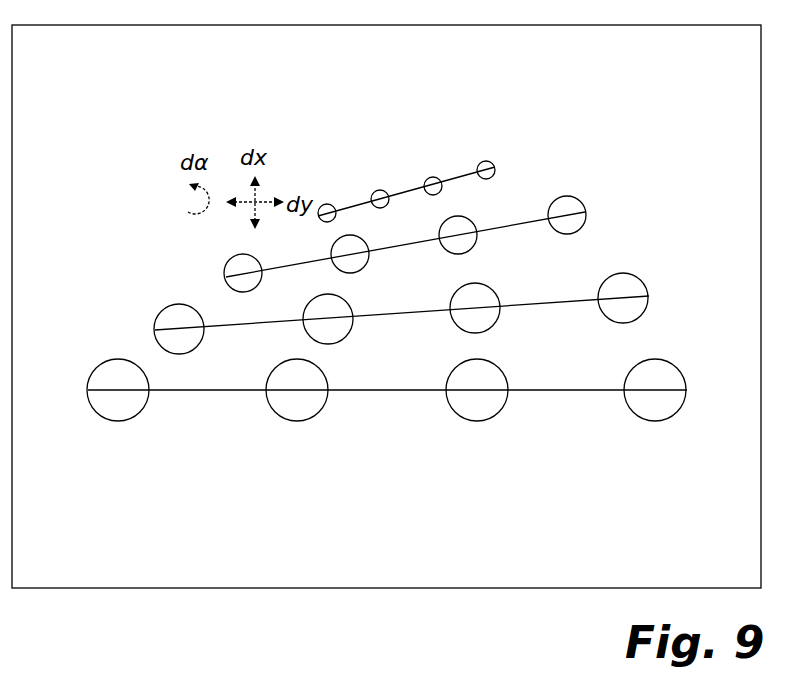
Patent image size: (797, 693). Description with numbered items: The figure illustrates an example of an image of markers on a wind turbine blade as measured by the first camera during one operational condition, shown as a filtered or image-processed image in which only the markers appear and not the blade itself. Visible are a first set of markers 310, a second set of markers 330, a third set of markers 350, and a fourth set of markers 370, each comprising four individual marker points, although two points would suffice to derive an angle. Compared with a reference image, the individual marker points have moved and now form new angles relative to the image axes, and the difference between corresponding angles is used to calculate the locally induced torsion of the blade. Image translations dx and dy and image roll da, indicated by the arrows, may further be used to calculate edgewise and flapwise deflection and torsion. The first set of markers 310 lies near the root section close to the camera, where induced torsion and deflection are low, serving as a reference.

The first set of markers 310 is at (694, 369).
The second set of markers 330 is at (666, 292).
The third set of markers 350 is at (609, 210).
The fourth set of markers 370 is at (514, 159).